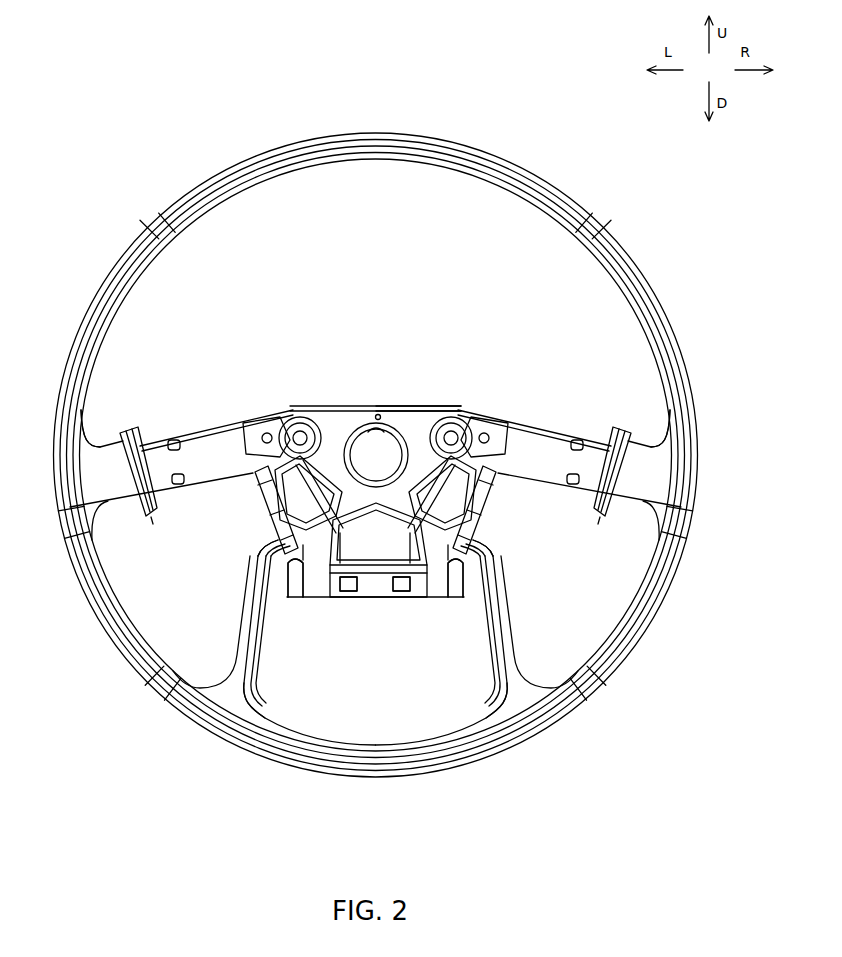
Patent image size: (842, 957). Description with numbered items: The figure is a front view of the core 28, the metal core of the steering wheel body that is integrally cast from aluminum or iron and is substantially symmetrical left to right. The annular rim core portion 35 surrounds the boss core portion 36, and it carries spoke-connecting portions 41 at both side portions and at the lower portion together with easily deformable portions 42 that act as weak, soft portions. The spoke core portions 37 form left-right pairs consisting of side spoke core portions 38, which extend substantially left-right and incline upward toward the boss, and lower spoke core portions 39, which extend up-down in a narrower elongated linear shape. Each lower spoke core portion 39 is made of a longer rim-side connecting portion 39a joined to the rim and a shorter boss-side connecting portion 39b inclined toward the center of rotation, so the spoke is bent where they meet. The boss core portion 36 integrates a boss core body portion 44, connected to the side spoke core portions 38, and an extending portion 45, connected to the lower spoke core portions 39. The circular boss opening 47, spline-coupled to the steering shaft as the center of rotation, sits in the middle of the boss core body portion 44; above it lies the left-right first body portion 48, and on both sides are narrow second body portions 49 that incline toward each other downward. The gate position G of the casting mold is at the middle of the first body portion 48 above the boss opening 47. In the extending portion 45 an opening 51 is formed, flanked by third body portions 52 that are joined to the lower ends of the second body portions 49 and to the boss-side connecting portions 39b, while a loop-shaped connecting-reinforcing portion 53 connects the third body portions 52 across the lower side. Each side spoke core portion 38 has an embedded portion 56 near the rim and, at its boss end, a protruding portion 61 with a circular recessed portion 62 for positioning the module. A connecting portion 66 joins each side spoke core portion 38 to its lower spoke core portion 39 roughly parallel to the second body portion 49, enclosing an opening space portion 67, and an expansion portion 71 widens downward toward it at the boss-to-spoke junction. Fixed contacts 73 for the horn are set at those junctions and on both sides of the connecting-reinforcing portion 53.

The core 28 is at (582, 173).
The rim core portion 35 is at (450, 146).
The boss core portion 36 is at (340, 404).
The spoke core portions 37 is at (158, 434).
The side spoke core portions 38 is at (375, 422).
The lower spoke core portions 39 is at (397, 642).
The rim-side connecting portion 39a is at (238, 649).
The boss-side connecting portion 39b is at (268, 552).
The spoke-connecting portions 41 is at (79, 321).
The easily deformable portions 42 is at (376, 133).
The boss core body portion 44 is at (432, 404).
The extending portion 45 is at (466, 589).
The boss opening 47 is at (362, 424).
The position of the gate G is at (379, 413).
The first body portion 48 is at (425, 450).
The second body portions 49 is at (296, 599).
The opening 51 is at (373, 588).
The third body portions 52 is at (349, 593).
The connecting-reinforcing portion 53 is at (378, 600).
The embedded portion 56 is at (375, 491).
The protruding portion 61 is at (300, 416).
The recessed portion 62 is at (265, 420).
The connecting portion 66 is at (268, 522).
The opening space portion 67 is at (258, 489).
The expansion portion 71 is at (230, 424).
The fixed contacts 73 is at (262, 432).